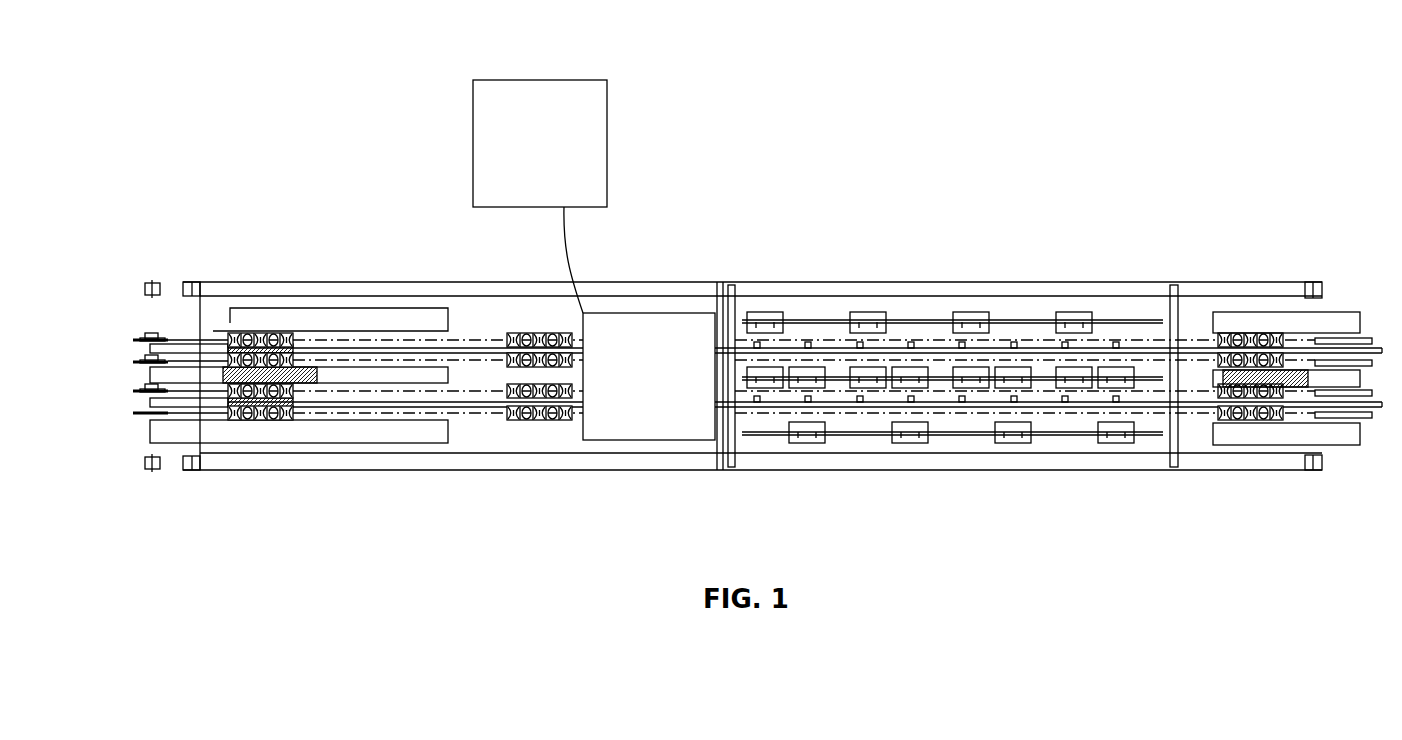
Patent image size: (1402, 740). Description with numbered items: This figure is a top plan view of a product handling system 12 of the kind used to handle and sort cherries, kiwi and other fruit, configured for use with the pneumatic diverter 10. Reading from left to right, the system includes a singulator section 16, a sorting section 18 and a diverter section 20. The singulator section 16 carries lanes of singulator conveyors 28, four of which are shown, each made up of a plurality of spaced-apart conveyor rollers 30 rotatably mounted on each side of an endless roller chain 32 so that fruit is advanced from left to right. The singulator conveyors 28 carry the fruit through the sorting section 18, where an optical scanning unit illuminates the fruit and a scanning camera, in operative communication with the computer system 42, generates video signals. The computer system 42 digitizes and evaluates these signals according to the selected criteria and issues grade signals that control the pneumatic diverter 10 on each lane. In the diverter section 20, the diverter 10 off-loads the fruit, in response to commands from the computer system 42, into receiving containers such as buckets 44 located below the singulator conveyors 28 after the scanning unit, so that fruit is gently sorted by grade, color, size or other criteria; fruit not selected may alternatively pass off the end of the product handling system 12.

The pneumatic diverter 10 is at (802, 348).
The product handling system 12 is at (840, 133).
The singulator section 16 is at (282, 310).
The sorting section 18 is at (670, 330).
The diverter section 20 is at (941, 296).
The singulator conveyors 28 is at (171, 332).
The conveyor rollers 30 is at (283, 414).
The endless roller chain 32 is at (417, 414).
The computer system 42 is at (590, 108).
The buckets 44 is at (982, 313).